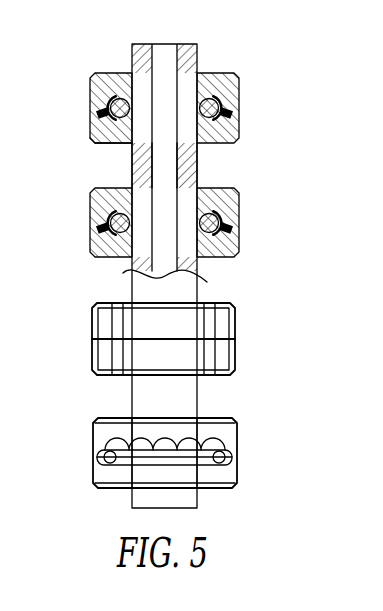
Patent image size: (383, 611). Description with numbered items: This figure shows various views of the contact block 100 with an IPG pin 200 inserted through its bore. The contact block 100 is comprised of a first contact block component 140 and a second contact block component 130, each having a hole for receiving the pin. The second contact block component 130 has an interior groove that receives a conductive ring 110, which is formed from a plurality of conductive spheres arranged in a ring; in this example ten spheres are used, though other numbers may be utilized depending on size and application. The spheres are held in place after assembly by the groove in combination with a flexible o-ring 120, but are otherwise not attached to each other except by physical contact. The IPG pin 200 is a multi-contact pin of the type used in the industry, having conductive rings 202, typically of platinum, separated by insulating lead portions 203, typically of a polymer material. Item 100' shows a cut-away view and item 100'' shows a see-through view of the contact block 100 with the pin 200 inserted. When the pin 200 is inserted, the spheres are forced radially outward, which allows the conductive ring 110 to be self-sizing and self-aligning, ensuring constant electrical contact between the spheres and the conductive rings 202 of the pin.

The contact block 100 is at (201, 339).
The cut-away view of contact block 100' is at (169, 87).
The see-through view of contact block 100'' is at (207, 453).
The conductive ring 110 is at (211, 73).
The flexible o-ring 120 is at (235, 111).
The second contact block component 130 is at (236, 252).
The first contact block component 140 is at (236, 198).
The IPG pin 200 is at (198, 498).
The conductive rings 202 is at (100, 143).
The insulating lead portions 203 is at (198, 167).